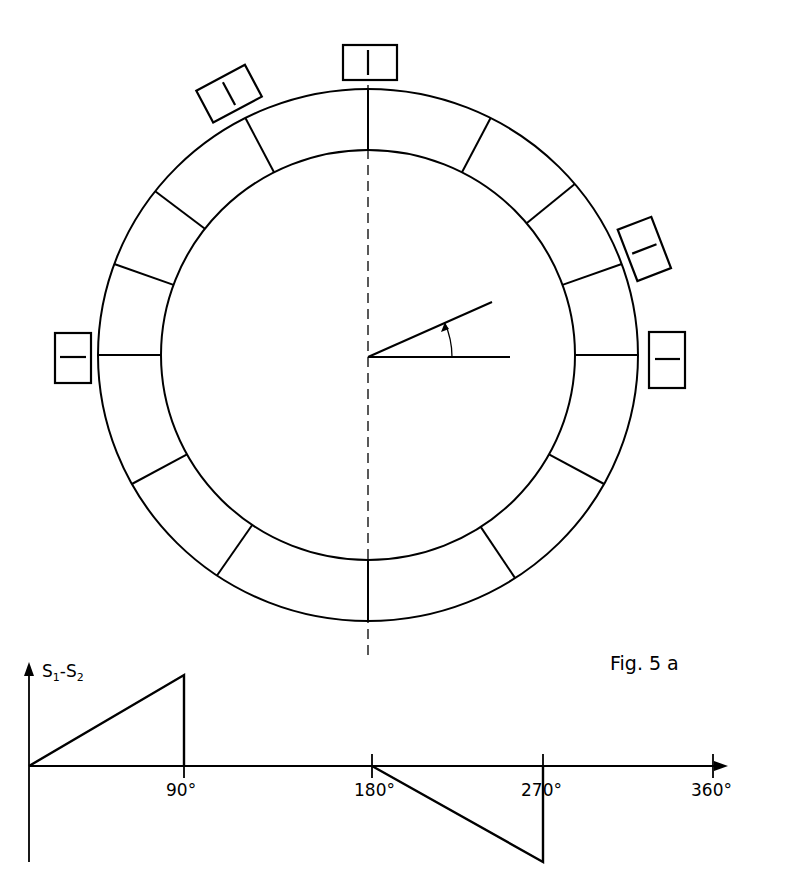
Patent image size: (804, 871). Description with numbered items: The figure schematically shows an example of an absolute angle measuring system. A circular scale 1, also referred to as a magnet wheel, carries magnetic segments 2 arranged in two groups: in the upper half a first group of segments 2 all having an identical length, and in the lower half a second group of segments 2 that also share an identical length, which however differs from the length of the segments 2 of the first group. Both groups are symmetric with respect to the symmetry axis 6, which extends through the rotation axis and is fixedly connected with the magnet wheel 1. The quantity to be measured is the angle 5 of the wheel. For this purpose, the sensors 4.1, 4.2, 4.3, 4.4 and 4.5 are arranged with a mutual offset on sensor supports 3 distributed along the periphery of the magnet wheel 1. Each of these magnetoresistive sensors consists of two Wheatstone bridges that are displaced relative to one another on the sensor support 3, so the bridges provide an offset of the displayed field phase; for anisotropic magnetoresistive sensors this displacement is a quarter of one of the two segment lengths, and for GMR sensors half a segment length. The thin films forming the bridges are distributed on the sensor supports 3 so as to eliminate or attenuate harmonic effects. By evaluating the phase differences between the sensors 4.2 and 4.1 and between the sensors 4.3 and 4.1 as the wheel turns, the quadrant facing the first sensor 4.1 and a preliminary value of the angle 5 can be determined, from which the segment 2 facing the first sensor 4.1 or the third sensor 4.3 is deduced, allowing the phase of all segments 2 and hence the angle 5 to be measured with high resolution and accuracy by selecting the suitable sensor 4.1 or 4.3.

The circular scale 1 is at (522, 488).
The magnetic segments 2 is at (460, 124).
The sensor support 3 is at (380, 239).
The first sensor 4.1 is at (672, 362).
The second sensor 4.2 is at (370, 62).
The third sensor 4.3 is at (76, 360).
The fourth sensor 4.4 is at (652, 258).
The fifth sensor 4.5 is at (200, 95).
The angle 5 is at (450, 343).
The symmetry axis 6 is at (365, 247).